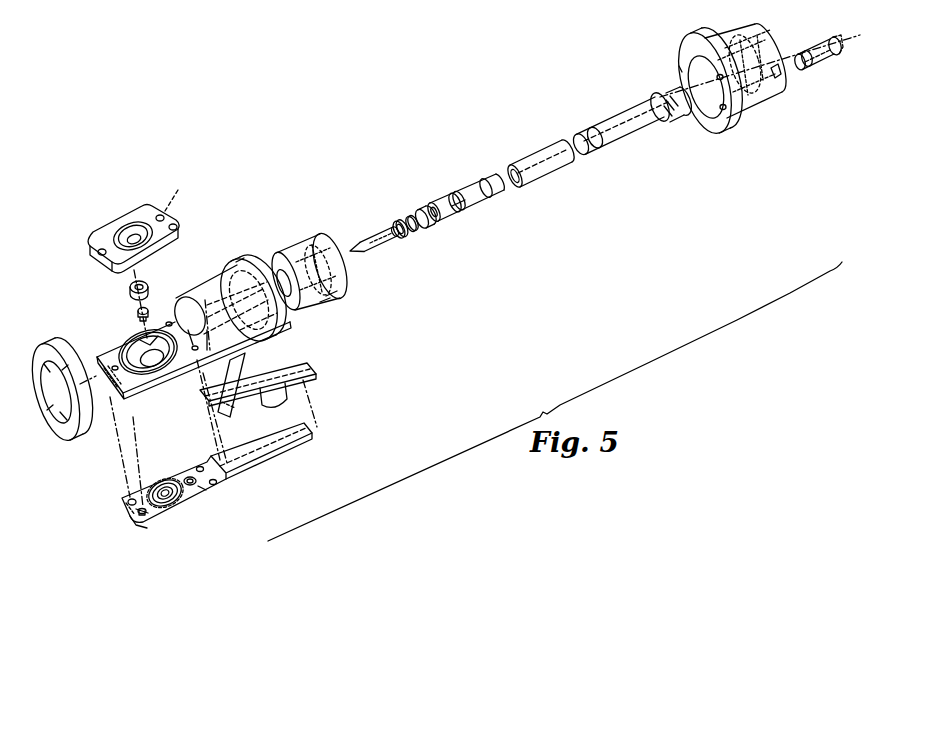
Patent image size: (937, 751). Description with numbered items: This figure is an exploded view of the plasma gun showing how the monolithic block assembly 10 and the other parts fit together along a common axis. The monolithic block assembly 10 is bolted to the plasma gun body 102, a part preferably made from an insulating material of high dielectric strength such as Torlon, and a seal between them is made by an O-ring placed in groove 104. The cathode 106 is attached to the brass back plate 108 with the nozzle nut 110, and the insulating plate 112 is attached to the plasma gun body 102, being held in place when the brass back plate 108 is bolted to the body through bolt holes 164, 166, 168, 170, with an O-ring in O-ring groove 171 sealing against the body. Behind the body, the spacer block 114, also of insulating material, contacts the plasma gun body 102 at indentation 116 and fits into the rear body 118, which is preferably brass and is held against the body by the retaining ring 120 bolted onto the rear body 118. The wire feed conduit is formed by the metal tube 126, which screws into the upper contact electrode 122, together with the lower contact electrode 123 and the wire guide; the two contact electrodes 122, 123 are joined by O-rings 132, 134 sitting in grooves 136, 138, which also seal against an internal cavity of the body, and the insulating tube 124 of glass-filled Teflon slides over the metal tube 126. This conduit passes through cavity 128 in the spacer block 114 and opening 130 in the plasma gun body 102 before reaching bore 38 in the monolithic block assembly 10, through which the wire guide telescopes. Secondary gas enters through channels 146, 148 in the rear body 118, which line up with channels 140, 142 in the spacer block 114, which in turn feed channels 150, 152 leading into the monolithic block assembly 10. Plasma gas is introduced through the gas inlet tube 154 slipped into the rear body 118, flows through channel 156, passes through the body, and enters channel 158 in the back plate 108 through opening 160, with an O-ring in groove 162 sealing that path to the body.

The monolithic block assembly 10 is at (100, 229).
The bore 38 is at (181, 194).
The plasma gun body 102 is at (205, 287).
The groove 104 is at (122, 343).
The cathode 106 is at (136, 315).
The brass back plate 108 is at (300, 447).
The nozzle nut 110 is at (129, 289).
The insulating plate 112 is at (303, 353).
The spacer block 114 is at (290, 250).
The indentation 116 is at (283, 315).
The rear body 118 is at (732, 133).
The retaining ring 120 is at (44, 345).
The upper contact electrode 122 is at (485, 200).
The lower contact electrode 123 is at (433, 253).
The insulating tube 124 is at (534, 154).
The metal tube 126 is at (598, 132).
The cavity 128 is at (270, 257).
The opening 130 is at (190, 330).
The O-ring 132 is at (398, 221).
The O-ring 134 is at (411, 216).
The groove 136 is at (428, 229).
The groove 138 is at (458, 212).
The channel 140 is at (302, 250).
The channel 142 is at (331, 300).
The channel 146 is at (758, 26).
The channel 148 is at (784, 75).
The channel 150 is at (205, 307).
The channel 152 is at (305, 391).
The gas inlet tube 154 is at (826, 58).
The channel 156 is at (345, 288).
The channel 158 is at (173, 503).
The opening 160 is at (189, 478).
The groove 162 is at (203, 490).
The bolt hole 164 is at (128, 498).
The bolt hole 166 is at (145, 520).
The bolt hole 168 is at (200, 465).
The bolt hole 170 is at (216, 484).
The O-ring groove 171 is at (163, 486).